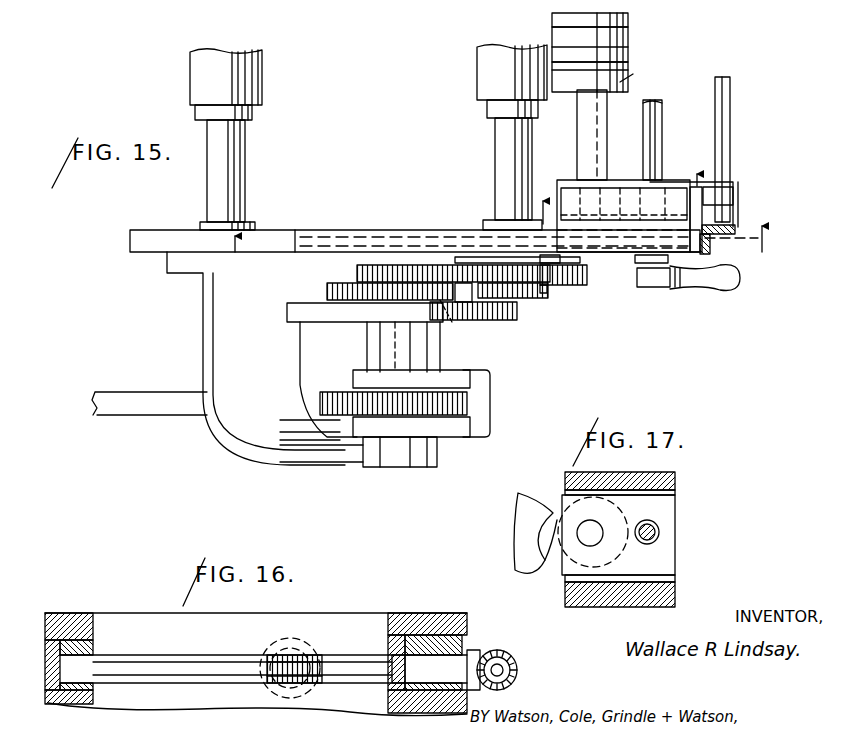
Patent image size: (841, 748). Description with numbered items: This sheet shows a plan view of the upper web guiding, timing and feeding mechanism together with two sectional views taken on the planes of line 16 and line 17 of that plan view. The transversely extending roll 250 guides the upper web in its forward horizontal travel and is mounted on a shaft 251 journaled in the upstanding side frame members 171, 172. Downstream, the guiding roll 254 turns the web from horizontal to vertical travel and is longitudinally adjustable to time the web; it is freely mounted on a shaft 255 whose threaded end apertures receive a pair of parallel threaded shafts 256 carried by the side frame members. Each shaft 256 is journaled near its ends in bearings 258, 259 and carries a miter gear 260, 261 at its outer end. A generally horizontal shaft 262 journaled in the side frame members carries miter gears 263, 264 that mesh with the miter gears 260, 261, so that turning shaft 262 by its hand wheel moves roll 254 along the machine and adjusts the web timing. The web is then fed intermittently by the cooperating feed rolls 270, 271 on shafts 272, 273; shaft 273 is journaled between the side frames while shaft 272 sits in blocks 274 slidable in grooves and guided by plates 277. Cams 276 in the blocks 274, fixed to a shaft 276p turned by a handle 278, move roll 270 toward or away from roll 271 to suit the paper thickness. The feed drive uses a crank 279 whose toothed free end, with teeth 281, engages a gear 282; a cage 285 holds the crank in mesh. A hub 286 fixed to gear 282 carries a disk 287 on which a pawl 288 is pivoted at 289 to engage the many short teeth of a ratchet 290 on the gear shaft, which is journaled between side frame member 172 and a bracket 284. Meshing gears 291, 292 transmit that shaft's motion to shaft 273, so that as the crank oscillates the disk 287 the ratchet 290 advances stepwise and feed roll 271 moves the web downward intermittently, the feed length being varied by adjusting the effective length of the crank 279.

In FIG. 15, the side frame member 172 is at (150, 243).
In FIG. 15, the shaft 256 is at (422, 232).
In FIG. 16, the shaft 256 is at (148, 668).
In FIG. 15, the line 16— 16 is at (502, 240).
In FIG. 15, the line 17— 17 is at (618, 183).
In FIG. 15, the roll 250 is at (262, 96).
In FIG. 15, the shaft 251 is at (240, 185).
In FIG. 15, the feed roll 271 is at (490, 70).
In FIG. 17, the feed roll 271 is at (520, 502).
In FIG. 15, the shaft 273 is at (510, 147).
In FIG. 15, the feed roll 270 is at (633, 28).
In FIG. 17, the feed roll 270 is at (530, 563).
In FIG. 15, the shaft 272 is at (618, 78).
In FIG. 15, the block 274 is at (568, 178).
In FIG. 17, the block 274 is at (677, 563).
In FIG. 15, the cam 276 is at (637, 203).
In FIG. 17, the cam 276 is at (652, 520).
In FIG. 15, the shaft 276p is at (655, 113).
In FIG. 17, the shaft 276p is at (660, 532).
In FIG. 15, the shaft 262 is at (740, 149).
In FIG. 16, the shaft 262 is at (490, 688).
In FIG. 15, the miter gear 263 is at (735, 222).
In FIG. 15, the miter gear 260 is at (713, 252).
In FIG. 15, the handle 278 is at (714, 285).
In FIG. 15, the gear 292 is at (590, 284).
In FIG. 15, the gear 291 is at (378, 268).
In FIG. 15, the ratchet 290 is at (330, 290).
In FIG. 15, the disk 287 is at (518, 312).
In FIG. 15, the pivot 289 is at (443, 307).
In FIG. 15, the pawl 288 is at (403, 290).
In FIG. 15, the hub 286 is at (440, 355).
In FIG. 15, the crank 279 is at (467, 392).
In FIG. 15, the cage 285 is at (480, 425).
In FIG. 15, the gear 282 is at (400, 416).
In FIG. 15, the teeth 281 is at (342, 416).
In FIG. 15, the bracket 284 is at (237, 355).
In FIG. 17, the plate 277 is at (677, 483).
In FIG. 16, the side frame member 171 is at (148, 704).
In FIG. 16, the bearing 258 is at (80, 613).
In FIG. 16, the guiding roll 254 is at (260, 648).
In FIG. 16, the shaft 255 is at (296, 655).
In FIG. 16, the bearing 259 is at (430, 613).
In FIG. 16, the miter gear 261 is at (490, 647).
In FIG. 16, the miter gear 264 is at (505, 667).